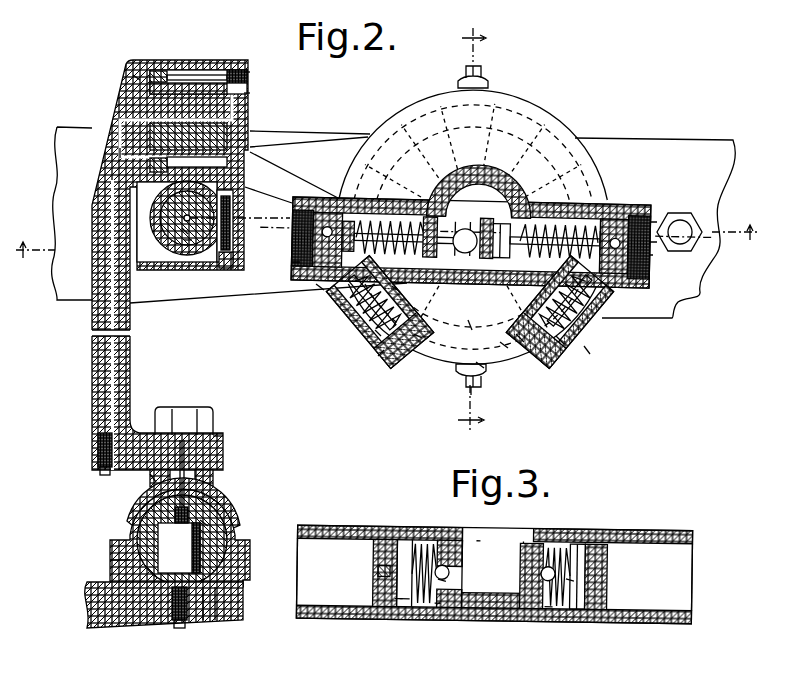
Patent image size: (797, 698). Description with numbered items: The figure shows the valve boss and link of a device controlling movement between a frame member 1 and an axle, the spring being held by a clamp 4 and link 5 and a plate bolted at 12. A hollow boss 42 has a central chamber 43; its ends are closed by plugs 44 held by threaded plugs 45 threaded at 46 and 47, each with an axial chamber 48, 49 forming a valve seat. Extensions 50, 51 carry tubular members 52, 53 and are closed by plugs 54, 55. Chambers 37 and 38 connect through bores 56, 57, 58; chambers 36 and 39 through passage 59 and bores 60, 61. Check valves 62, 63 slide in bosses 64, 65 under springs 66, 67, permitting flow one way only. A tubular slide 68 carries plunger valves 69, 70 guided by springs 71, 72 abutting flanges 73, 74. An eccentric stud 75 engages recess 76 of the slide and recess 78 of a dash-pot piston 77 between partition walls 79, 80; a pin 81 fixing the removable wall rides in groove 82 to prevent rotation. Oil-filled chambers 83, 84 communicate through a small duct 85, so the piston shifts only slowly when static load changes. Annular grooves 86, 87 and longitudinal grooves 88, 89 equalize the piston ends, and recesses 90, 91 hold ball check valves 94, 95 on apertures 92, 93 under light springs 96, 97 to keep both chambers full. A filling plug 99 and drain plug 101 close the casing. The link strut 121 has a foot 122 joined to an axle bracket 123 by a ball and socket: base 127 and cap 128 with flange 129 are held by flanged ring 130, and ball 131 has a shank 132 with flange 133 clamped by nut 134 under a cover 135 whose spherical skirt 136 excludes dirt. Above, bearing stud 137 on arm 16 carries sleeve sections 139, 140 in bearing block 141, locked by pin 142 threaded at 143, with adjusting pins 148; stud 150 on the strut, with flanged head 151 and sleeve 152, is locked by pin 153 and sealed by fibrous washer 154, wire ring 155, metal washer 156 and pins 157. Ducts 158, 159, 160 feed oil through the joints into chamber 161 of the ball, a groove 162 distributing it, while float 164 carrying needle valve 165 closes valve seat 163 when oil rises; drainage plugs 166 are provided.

In FIG. 2, the frame member 1 is at (82, 137).
In FIG. 2, the clamp 4 is at (391, 240).
In FIG. 2, the link 5 is at (472, 231).
In FIG. 2, the bolt 12 is at (685, 222).
In FIG. 2, the arm 16 is at (338, 148).
In FIG. 2, the effective chamber 36 is at (446, 150).
In FIG. 2, the effective chamber 37 is at (522, 145).
In FIG. 2, the effective chamber 38 is at (505, 345).
In FIG. 2, the effective chamber 39 is at (418, 337).
In FIG. 2, the hollow boss 42 is at (480, 366).
In FIG. 2, the cylindrical chamber 43 is at (438, 198).
In FIG. 2, the plug 44 is at (292, 275).
In FIG. 2, the threaded plug 45 is at (292, 262).
In FIG. 2, the threaded connection 46 is at (295, 237).
In FIG. 2, the threaded connection 47 is at (648, 243).
In FIG. 2, the axial chamber 48 is at (320, 286).
In FIG. 2, the axial chamber 49 is at (673, 300).
In FIG. 2, the hollow extension 50 is at (363, 323).
In FIG. 2, the hollow extension 51 is at (580, 350).
In FIG. 2, the tubular member 52 is at (353, 312).
In FIG. 2, the tubular member 53 is at (590, 333).
In FIG. 2, the threaded plug 54 is at (381, 360).
In FIG. 2, the threaded plug 55 is at (520, 338).
In FIG. 2, the bore 56 is at (577, 185).
In FIG. 2, the bore 57 is at (647, 226).
In FIG. 2, the bore 58 is at (560, 340).
In FIG. 2, the passage 59 is at (345, 220).
In FIG. 2, the bore 60 is at (345, 238).
In FIG. 2, the bore 61 is at (396, 290).
In FIG. 2, the check valve 62 is at (347, 290).
In FIG. 2, the check valve 63 is at (598, 298).
In FIG. 2, the boss 64 is at (372, 348).
In FIG. 2, the boss 65 is at (548, 340).
In FIG. 2, the helical spring 66 is at (378, 333).
In FIG. 2, the helical spring 67 is at (587, 350).
In FIG. 2, the slide 68 is at (540, 205).
In FIG. 3, the slide 68 is at (617, 535).
In FIG. 2, the plunger 69 is at (364, 226).
In FIG. 2, the plunger 70 is at (565, 225).
In FIG. 2, the helical spring 71 is at (410, 227).
In FIG. 2, the helical spring 72 is at (578, 225).
In FIG. 2, the flange 73 is at (330, 228).
In FIG. 2, the flange 74 is at (617, 225).
In FIG. 2, the stud 75 is at (468, 228).
In FIG. 3, the recess 76 is at (477, 536).
In FIG. 3, the dash-pot piston 77 is at (523, 548).
In FIG. 3, the recess 78 is at (493, 567).
In FIG. 3, the partition wall 79 is at (607, 560).
In FIG. 3, the partition wall 80 is at (373, 551).
In FIG. 2, the transverse pin 81 is at (472, 330).
In FIG. 3, the transverse pin 81 is at (378, 573).
In FIG. 2, the groove 82 is at (463, 366).
In FIG. 3, the chamber 83 is at (580, 605).
In FIG. 3, the chamber 84 is at (403, 597).
In FIG. 3, the duct 85 is at (501, 600).
In FIG. 3, the annular groove 86 is at (548, 608).
In FIG. 3, the annular groove 87 is at (438, 606).
In FIG. 3, the longitudinal groove 88 is at (523, 540).
In FIG. 3, the longitudinal groove 89 is at (462, 540).
In FIG. 3, the recess 90 is at (555, 557).
In FIG. 3, the recess 91 is at (428, 552).
In FIG. 3, the aperture 92 is at (540, 575).
In FIG. 3, the aperture 93 is at (448, 576).
In FIG. 3, the ball 94 is at (543, 580).
In FIG. 3, the ball 95 is at (441, 580).
In FIG. 3, the helical spring 96 is at (570, 578).
In FIG. 3, the helical spring 97 is at (420, 603).
In FIG. 2, the threaded plug 99 is at (483, 75).
In FIG. 2, the threaded plug 101 is at (470, 386).
In FIG. 2, the link strut 121 is at (92, 340).
In FIG. 2, the foot 122 is at (213, 438).
In FIG. 2, the bracket 123 is at (102, 618).
In FIG. 2, the base 127 is at (218, 585).
In FIG. 2, the cap 128 is at (130, 522).
In FIG. 2, the annular flange 129 is at (120, 552).
In FIG. 2, the flanged ring 130 is at (250, 555).
In FIG. 2, the ball member 131 is at (217, 527).
In FIG. 2, the shank 132 is at (197, 453).
In FIG. 2, the annular flange 133 is at (207, 477).
In FIG. 2, the nut 134 is at (180, 410).
In FIG. 2, the protecting cover 135 is at (150, 477).
In FIG. 2, the skirt 136 is at (150, 508).
In FIG. 2, the bearing stud 137 is at (190, 240).
In FIG. 2, the bearing sleeve section 139 is at (150, 232).
In FIG. 2, the bearing sleeve section 140 is at (153, 197).
In FIG. 2, the bearing block 141 is at (247, 163).
In FIG. 2, the locking pin 142 is at (228, 268).
In FIG. 2, the threaded end 143 is at (226, 252).
In FIG. 2, the pin 148 is at (207, 182).
In FIG. 2, the bearing stud 150 is at (180, 97).
In FIG. 2, the flanged head 151 is at (248, 72).
In FIG. 2, the bearing sleeve 152 is at (148, 70).
In FIG. 2, the locking pin 153 is at (250, 93).
In FIG. 2, the fibrous washer 154 is at (153, 167).
In FIG. 2, the wire ring 155 is at (155, 120).
In FIG. 2, the metal washer 156 is at (135, 77).
In FIG. 2, the washer adjusting pin 157 is at (222, 73).
In FIG. 2, the duct 158 is at (185, 225).
In FIG. 2, the duct 159 is at (240, 140).
In FIG. 2, the duct 160 is at (120, 152).
In FIG. 2, the chamber 161 is at (203, 523).
In FIG. 2, the groove 162 is at (203, 620).
In FIG. 2, the valve seat 163 is at (163, 507).
In FIG. 2, the float 164 is at (178, 548).
In FIG. 2, the needle valve 165 is at (181, 522).
In FIG. 2, the drainage plug 166 is at (100, 467).